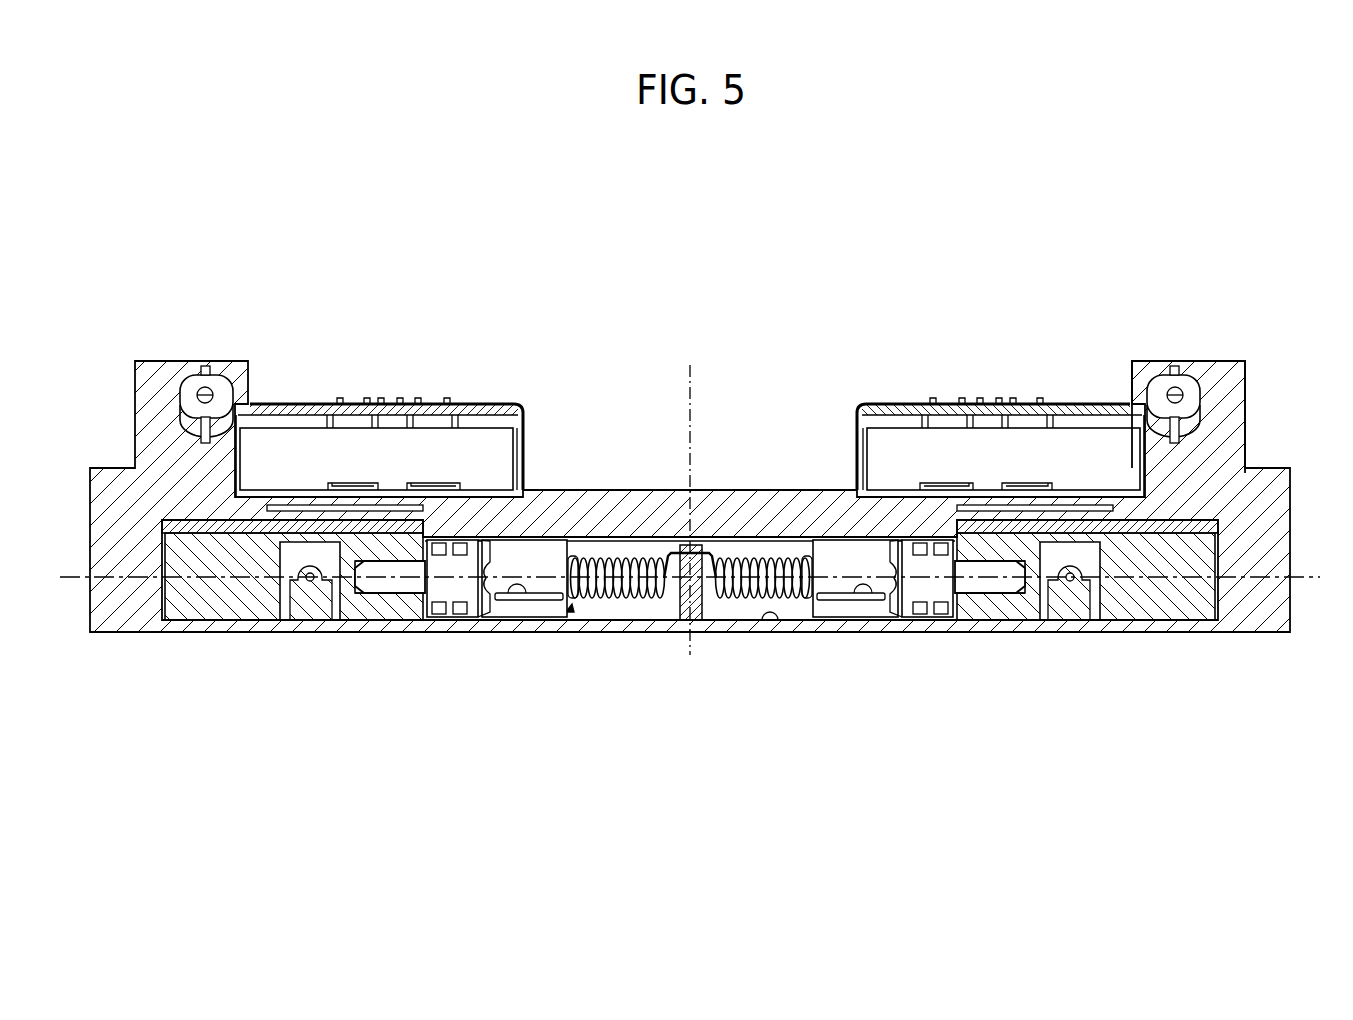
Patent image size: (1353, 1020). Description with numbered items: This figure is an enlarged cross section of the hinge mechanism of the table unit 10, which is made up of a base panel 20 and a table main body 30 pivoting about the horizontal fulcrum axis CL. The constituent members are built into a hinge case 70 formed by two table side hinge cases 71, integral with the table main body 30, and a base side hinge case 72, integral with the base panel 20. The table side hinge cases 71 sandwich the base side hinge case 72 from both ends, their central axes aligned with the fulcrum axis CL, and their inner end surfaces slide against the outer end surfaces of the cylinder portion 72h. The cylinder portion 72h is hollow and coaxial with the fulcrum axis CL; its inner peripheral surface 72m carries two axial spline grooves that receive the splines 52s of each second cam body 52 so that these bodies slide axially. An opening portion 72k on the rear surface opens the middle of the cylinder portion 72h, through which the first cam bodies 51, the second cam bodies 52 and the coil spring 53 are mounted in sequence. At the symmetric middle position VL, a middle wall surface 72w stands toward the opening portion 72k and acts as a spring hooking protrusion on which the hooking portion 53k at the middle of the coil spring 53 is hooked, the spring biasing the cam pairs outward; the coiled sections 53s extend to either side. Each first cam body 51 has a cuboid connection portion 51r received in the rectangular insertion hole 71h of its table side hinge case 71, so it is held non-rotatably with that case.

The table unit 10 is at (1099, 228).
The base panel 20 is at (1211, 360).
The table main body 30 is at (1157, 636).
The first cam body 51 is at (690, 625).
The connection portion 51r is at (400, 591).
The second cam body 52 is at (680, 625).
The spline 52s is at (522, 598).
The coil spring 53 is at (690, 522).
The spring coil portion 53s is at (632, 600).
The hooking portion 53k is at (676, 548).
The hinge case 70 is at (690, 570).
The table side hinge case 71 is at (690, 546).
The insertion hole 71h is at (384, 566).
The base side hinge case 72 is at (690, 546).
The cylinder portion 72h is at (569, 613).
The opening portion 72k is at (615, 540).
The inner peripheral surface 72m is at (773, 616).
The middle wall surface 72w is at (712, 616).
The position partitioning the cylinder portion VL is at (690, 366).
The fulcrum axis CL is at (1313, 577).